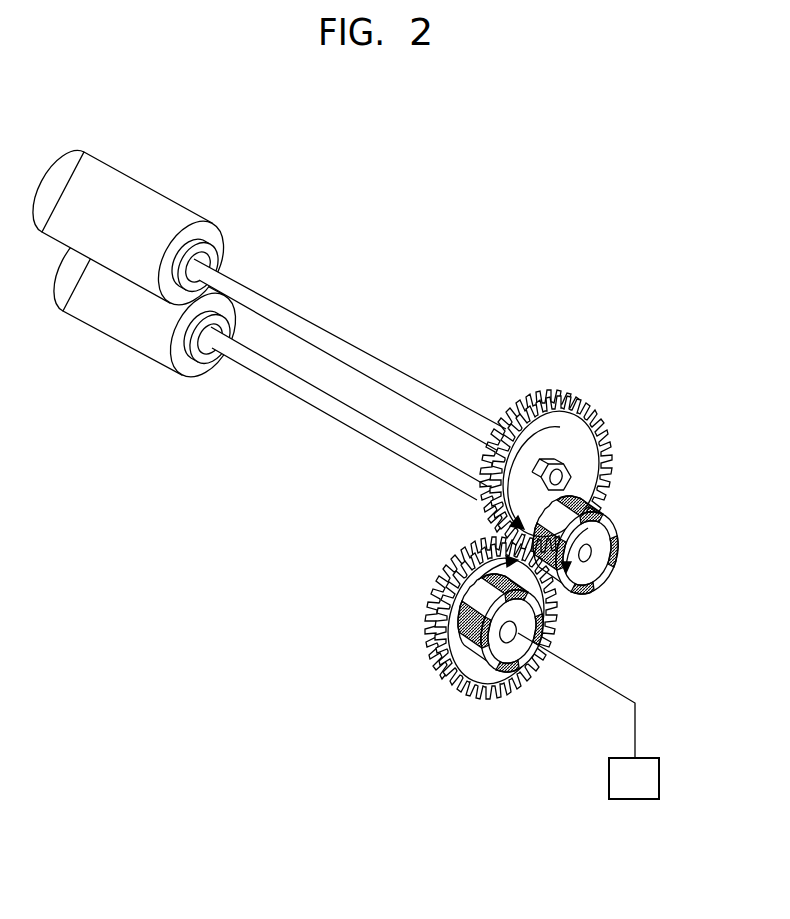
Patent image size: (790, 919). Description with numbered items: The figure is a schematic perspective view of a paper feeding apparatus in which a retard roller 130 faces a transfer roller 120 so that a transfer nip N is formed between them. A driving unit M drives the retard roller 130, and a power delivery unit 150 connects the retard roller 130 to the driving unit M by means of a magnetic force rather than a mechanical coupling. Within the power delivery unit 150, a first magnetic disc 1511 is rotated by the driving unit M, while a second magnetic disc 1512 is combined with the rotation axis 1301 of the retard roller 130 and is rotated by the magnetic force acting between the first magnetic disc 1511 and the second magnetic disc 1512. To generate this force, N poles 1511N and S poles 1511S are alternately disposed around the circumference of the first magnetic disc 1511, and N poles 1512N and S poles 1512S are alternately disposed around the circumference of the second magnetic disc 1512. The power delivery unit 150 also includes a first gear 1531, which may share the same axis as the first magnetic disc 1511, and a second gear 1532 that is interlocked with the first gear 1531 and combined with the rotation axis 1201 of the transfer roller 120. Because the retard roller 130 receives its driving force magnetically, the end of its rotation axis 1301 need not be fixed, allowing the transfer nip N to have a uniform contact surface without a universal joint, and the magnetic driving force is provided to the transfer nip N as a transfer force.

The transfer roller 120 is at (152, 198).
The retard roller 130 is at (117, 323).
The transfer nip N is at (84, 266).
The rotation axis of the transfer roller 1201 is at (388, 375).
The rotation axis of the retard roller 1301 is at (355, 424).
The power delivery unit 150 is at (539, 568).
The second gear 1532 is at (606, 415).
The first gear 1531 is at (428, 633).
The second magnetic disc 1512 is at (621, 560).
The S poles of the second magnetic disc 1512S is at (618, 513).
The N poles of the second magnetic disc 1512N is at (621, 535).
The first magnetic disc 1511 is at (452, 661).
The S poles of the first magnetic disc 1511S is at (464, 653).
The N poles of the first magnetic disc 1511N is at (500, 656).
The driving unit M is at (588, 716).